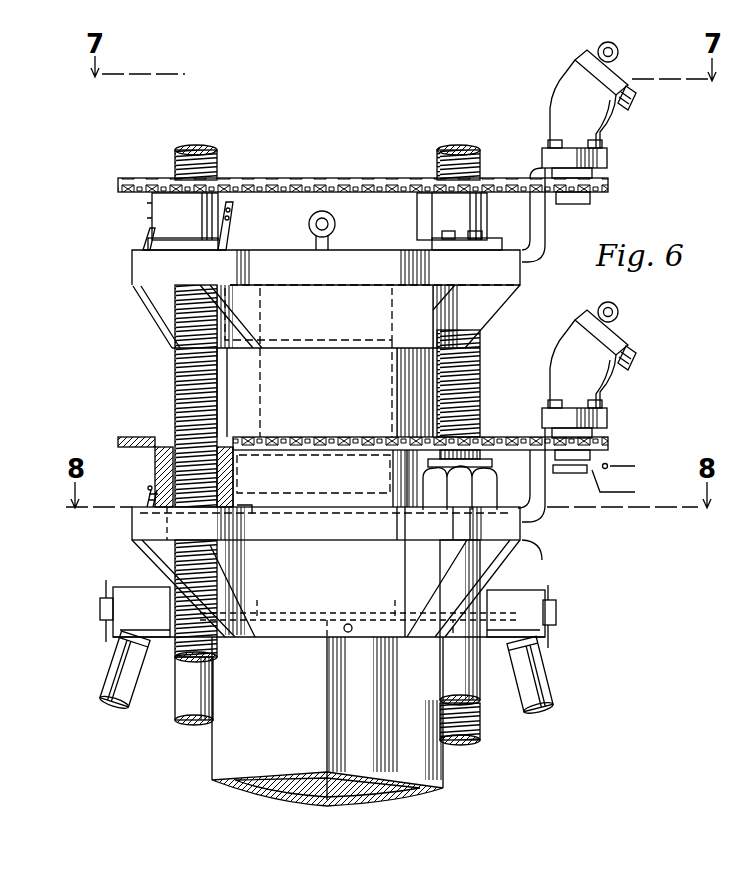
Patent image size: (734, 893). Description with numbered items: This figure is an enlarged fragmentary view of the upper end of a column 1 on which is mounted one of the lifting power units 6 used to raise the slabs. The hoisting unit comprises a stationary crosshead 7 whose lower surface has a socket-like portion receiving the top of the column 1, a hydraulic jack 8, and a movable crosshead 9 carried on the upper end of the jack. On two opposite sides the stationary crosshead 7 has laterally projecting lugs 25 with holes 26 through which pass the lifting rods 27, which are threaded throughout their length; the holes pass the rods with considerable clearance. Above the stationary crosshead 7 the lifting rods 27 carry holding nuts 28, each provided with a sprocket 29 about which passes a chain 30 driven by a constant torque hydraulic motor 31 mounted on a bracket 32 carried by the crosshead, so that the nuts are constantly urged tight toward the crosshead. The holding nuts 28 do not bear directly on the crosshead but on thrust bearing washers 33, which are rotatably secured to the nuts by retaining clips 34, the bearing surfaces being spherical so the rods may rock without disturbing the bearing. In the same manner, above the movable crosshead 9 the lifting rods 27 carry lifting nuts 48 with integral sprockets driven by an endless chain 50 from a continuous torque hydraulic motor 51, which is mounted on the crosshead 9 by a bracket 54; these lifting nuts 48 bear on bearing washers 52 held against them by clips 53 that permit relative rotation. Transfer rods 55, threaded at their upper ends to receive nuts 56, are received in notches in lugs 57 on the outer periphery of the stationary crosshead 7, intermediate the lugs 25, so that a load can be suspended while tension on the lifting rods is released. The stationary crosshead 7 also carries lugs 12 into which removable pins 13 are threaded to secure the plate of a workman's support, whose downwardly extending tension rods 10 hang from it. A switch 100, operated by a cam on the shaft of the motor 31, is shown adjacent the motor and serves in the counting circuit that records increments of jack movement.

The column 1 is at (445, 775).
The power unit 6 is at (401, 150).
The stationary crosshead 7 is at (365, 568).
The hydraulic jack 8 is at (242, 391).
The movable crosshead 9 is at (522, 277).
The tension rods 10 is at (551, 684).
The lugs 12 is at (139, 586).
The removable pins 13 is at (100, 611).
The lugs 25 is at (132, 514).
The holes 26 is at (132, 530).
The lifting rods 27 is at (172, 161).
The holding nuts 28 is at (153, 456).
The sprocket 29 is at (133, 438).
The chain 30 is at (331, 441).
The constant torque hydraulic motor 31 is at (598, 383).
The bracket 32 is at (537, 527).
The thrust bearing washers 33 is at (252, 518).
The retaining clips 34 is at (148, 494).
The lifting nuts 48 is at (162, 213).
The endless chain 50 is at (331, 178).
The continuous torque hydraulic motor 51 is at (598, 125).
The bearing washers 52 is at (148, 237).
The clips 53 is at (236, 232).
The bracket 54 is at (547, 216).
The transfer rods 55 is at (176, 701).
The nuts 56 is at (488, 483).
The lugs 57 is at (532, 546).
The switch 100 is at (591, 478).